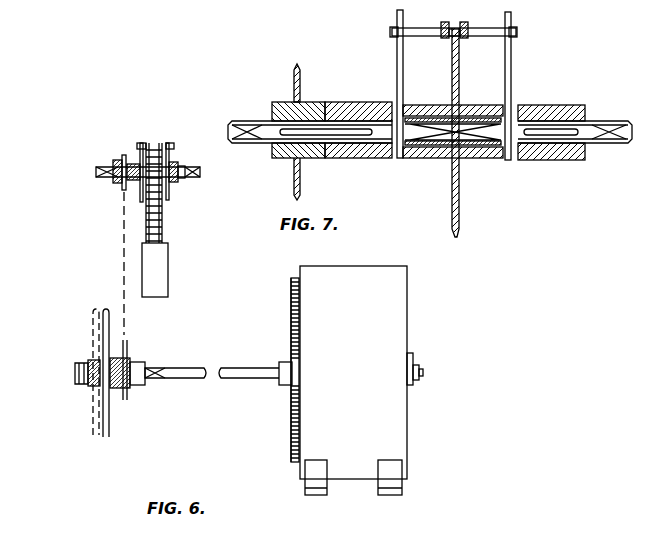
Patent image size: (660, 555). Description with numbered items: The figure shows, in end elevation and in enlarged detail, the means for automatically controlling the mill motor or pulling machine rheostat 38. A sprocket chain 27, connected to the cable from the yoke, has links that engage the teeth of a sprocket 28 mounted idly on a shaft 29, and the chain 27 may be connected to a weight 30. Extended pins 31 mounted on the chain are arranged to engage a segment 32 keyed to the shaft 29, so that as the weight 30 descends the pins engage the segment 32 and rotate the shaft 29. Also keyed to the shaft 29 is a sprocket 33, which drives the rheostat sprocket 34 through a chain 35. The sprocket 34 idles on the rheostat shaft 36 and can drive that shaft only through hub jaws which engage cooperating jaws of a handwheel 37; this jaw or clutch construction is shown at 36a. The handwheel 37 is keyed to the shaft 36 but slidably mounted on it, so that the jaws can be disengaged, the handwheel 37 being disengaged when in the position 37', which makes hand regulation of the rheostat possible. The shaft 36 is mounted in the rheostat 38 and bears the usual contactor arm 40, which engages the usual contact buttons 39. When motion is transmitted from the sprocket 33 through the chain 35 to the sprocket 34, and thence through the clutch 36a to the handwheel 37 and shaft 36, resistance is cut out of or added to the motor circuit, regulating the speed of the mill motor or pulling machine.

In FIG. 7, the sprocket chain 27 is at (444, 40).
In FIG. 6, the sprocket chain 27 is at (162, 218).
In FIG. 7, the sprocket 28 is at (460, 60).
In FIG. 6, the sprocket 28 is at (158, 201).
In FIG. 7, the shaft 29 is at (260, 120).
In FIG. 6, the shaft 29 is at (200, 172).
In FIG. 6, the weight 30 is at (168, 281).
In FIG. 7, the extended pins 31 is at (400, 30).
In FIG. 7, the segment 32 is at (397, 68).
In FIG. 7, the sprocket 33 is at (293, 166).
In FIG. 6, the sprocket 33 is at (124, 190).
In FIG. 6, the rheostat sprocket 34 is at (128, 345).
In FIG. 6, the chain 35 is at (124, 310).
In FIG. 6, the rheostat shaft 36 is at (93, 380).
In FIG. 6, the jaw or clutch construction 36a is at (112, 390).
In FIG. 6, the handwheel 37 is at (125, 384).
In FIG. 6, the disengaged position of handwheel 37' is at (79, 386).
In FIG. 6, the rheostat 38 is at (353, 380).
In FIG. 6, the contact buttons 39 is at (291, 404).
In FIG. 6, the contactor arm 40 is at (290, 325).